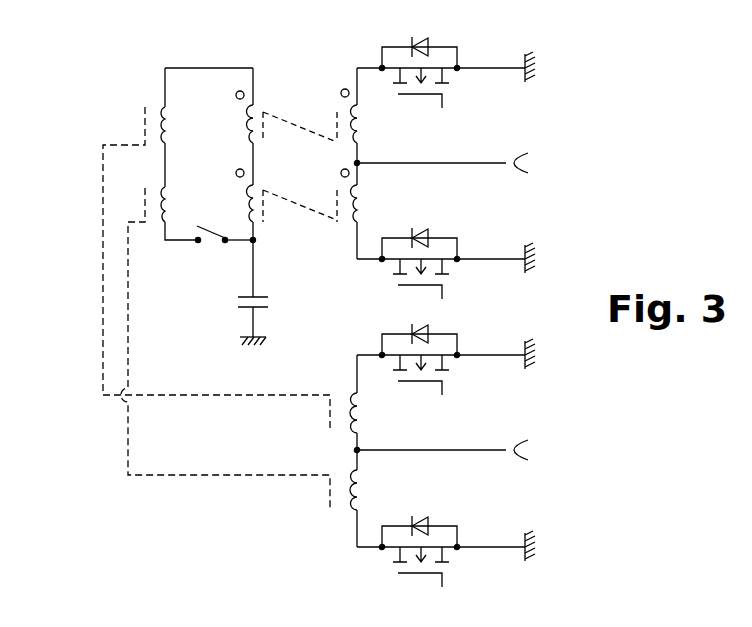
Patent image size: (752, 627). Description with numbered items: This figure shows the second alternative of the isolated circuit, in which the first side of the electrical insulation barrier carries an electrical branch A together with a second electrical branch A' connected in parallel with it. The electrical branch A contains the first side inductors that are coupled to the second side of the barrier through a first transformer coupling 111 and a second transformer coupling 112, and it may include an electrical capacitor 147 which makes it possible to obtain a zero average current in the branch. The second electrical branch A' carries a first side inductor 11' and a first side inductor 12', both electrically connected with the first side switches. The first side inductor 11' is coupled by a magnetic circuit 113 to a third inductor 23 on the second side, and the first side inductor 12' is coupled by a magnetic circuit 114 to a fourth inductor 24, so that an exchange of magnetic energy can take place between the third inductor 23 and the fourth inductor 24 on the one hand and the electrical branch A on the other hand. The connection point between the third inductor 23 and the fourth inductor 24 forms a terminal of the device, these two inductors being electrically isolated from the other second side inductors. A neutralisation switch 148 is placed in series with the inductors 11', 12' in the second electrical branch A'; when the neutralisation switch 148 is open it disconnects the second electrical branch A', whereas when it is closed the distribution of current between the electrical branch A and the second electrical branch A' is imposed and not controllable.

The electrical branch A is at (209, 152).
The first side inductor 11' is at (130, 107).
The first side inductor 12' is at (183, 187).
The second electrical branch A' is at (139, 167).
The first transformer coupling 111 is at (300, 127).
The second transformer coupling 112 is at (296, 203).
The magnetic circuit 113 is at (103, 257).
The magnetic circuit 114 is at (200, 475).
The electrical capacitor 147 is at (237, 302).
The neutralisation switch 148 is at (208, 246).
The third inductor 23 is at (358, 410).
The fourth inductor 24 is at (358, 488).